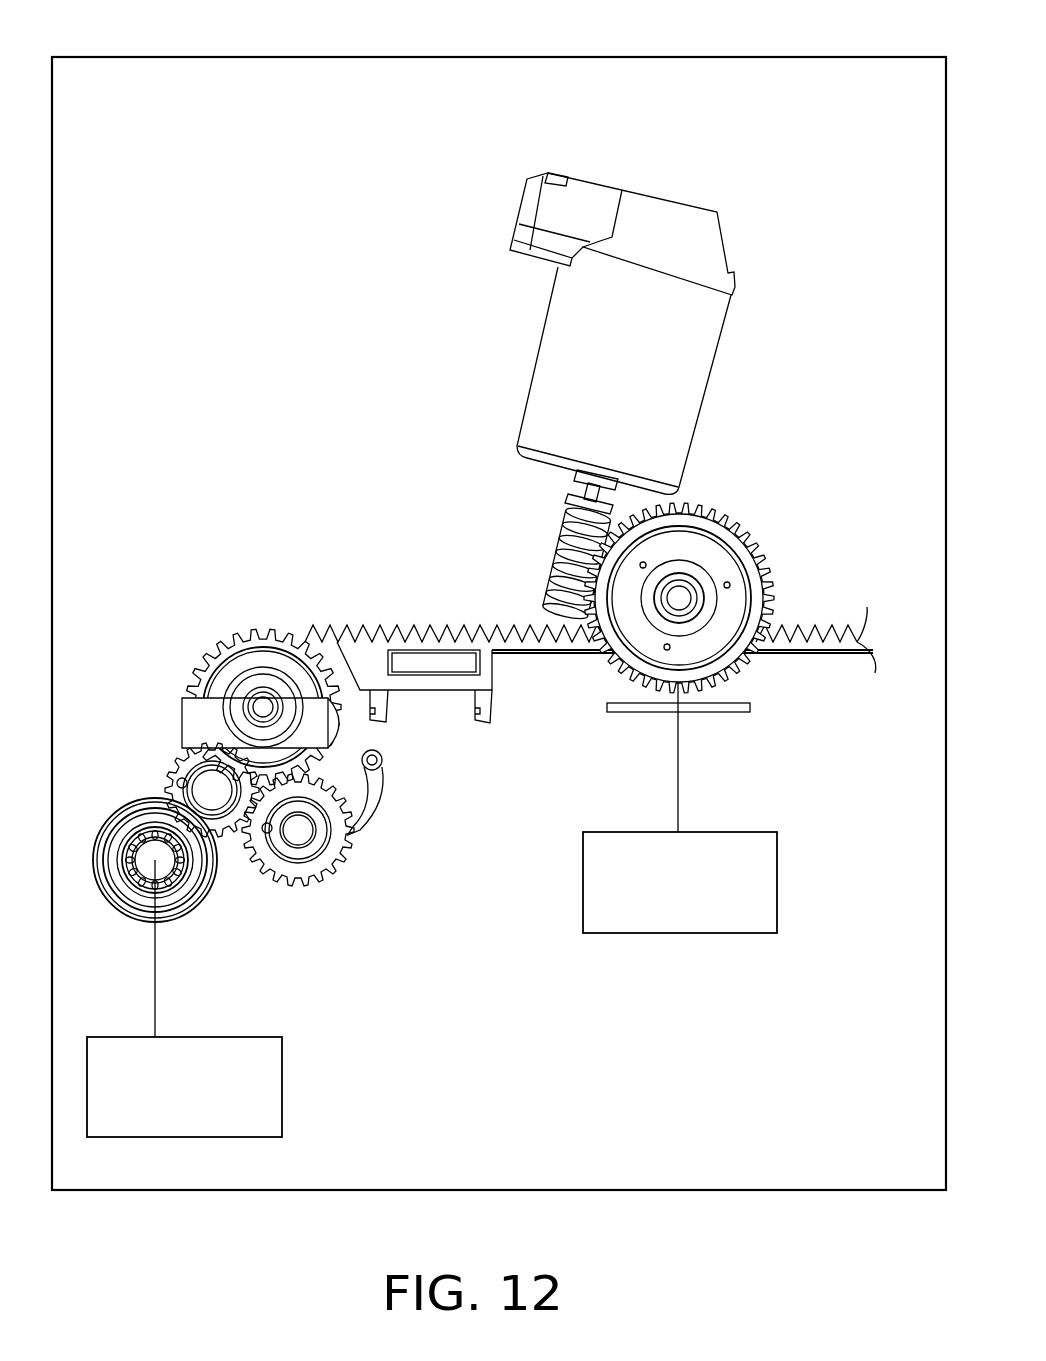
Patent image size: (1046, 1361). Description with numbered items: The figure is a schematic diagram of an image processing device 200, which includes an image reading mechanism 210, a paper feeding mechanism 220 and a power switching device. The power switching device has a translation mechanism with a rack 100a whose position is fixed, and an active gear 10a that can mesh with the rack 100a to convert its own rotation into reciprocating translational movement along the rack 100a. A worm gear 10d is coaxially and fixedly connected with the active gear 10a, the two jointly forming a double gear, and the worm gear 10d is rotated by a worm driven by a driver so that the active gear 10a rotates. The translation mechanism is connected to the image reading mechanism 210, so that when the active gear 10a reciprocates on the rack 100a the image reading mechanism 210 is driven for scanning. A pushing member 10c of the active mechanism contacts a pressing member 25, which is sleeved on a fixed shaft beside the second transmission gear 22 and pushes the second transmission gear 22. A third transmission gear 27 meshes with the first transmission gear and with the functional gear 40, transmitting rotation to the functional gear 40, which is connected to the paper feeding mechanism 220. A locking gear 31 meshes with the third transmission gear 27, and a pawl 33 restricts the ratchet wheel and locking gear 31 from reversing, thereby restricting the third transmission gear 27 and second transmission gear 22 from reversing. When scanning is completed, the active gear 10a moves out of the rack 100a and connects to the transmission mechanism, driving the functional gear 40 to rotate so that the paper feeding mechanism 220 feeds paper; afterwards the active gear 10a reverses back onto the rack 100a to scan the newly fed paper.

The image processing device 200 is at (500, 57).
The image reading mechanism 210 is at (737, 832).
The paper feeding mechanism 220 is at (185, 1137).
The rack 100a is at (540, 645).
The worm gear 10d is at (756, 604).
The active gear 10a is at (705, 650).
The pushing member 10c is at (700, 705).
The second transmission gear 22 is at (261, 658).
The pressing member 25 is at (195, 742).
The third transmission gear 27 is at (163, 778).
The locking gear 31 is at (320, 866).
The pawl 33 is at (378, 790).
The functional gear 40 is at (185, 893).